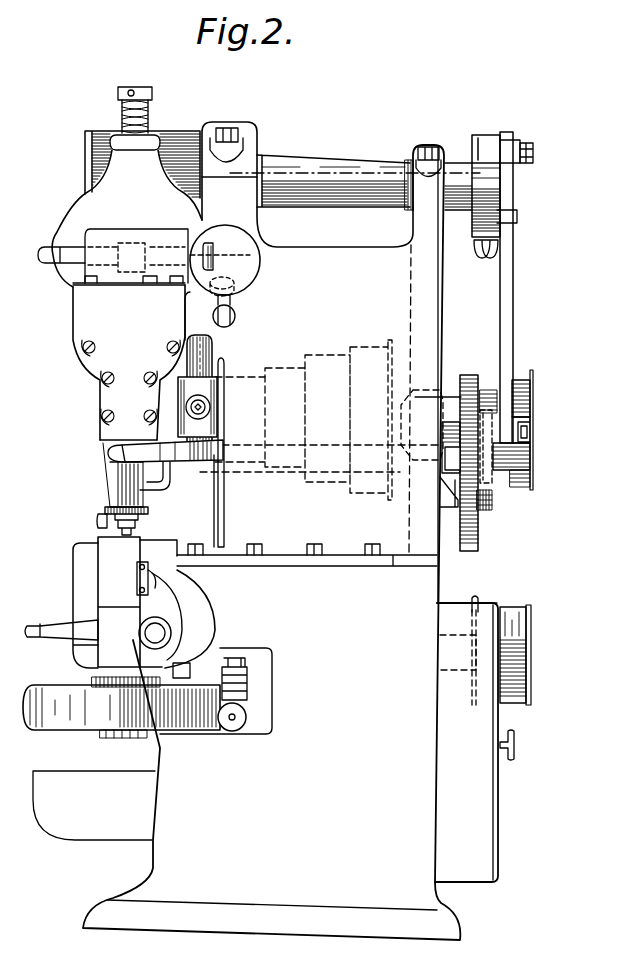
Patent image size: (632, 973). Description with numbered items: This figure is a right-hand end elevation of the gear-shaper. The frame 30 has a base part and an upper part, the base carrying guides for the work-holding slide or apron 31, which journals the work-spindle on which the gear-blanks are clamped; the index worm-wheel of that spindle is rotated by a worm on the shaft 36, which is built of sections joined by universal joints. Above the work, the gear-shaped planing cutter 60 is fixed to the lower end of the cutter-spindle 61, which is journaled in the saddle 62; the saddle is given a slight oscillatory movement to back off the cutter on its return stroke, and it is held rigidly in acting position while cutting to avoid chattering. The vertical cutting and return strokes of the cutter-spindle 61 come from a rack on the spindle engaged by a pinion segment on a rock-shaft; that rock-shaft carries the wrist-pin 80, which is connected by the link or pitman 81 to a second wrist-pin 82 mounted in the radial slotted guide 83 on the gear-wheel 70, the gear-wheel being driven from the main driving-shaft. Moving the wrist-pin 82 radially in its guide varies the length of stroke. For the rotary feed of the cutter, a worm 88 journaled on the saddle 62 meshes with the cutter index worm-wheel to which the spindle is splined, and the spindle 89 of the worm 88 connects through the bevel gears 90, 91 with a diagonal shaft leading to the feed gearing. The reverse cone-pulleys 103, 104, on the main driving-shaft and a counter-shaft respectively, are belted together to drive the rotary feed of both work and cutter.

The frame 30 is at (413, 790).
The work-holding slide or apron 31 is at (108, 577).
The shaft 36 is at (240, 716).
The gear-shaped planing cutter 60 is at (108, 506).
The cutter-spindle 61 is at (118, 468).
The saddle 62 is at (131, 317).
The gear 70 is at (482, 537).
The wrist-pin 80 is at (535, 160).
The link or pitman 81 is at (508, 246).
The second wrist-pin 82 is at (531, 430).
The radial slotted guide 83 is at (490, 473).
The worm 88 is at (143, 250).
The spindle of worm 89 is at (76, 236).
The bevel gear 90 is at (232, 254).
The bevel gear 91 is at (243, 290).
The reverse cone-pulley 103 is at (527, 397).
The reverse cone-pulley 104 is at (516, 618).